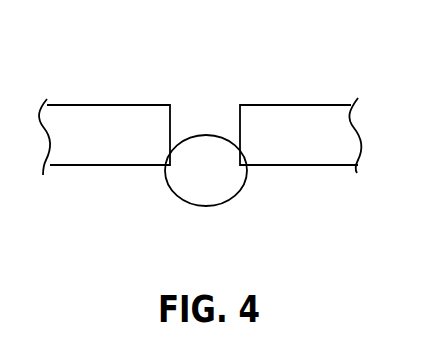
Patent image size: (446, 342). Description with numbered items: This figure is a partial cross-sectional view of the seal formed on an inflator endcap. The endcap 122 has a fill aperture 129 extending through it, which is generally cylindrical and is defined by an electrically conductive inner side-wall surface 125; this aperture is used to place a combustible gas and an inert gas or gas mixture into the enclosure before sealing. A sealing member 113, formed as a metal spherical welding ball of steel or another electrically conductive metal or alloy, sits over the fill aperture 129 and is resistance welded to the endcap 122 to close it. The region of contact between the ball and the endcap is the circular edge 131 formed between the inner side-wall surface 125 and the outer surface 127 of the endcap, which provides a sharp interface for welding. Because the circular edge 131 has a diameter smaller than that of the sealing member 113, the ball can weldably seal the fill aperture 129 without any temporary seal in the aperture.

The endcap 122 is at (98, 125).
The sealing member 113 is at (205, 183).
The inner side-wall surface 125 is at (171, 118).
The fill aperture 129 is at (208, 117).
The outer surface 127 is at (105, 167).
The circular edge 131 is at (247, 167).